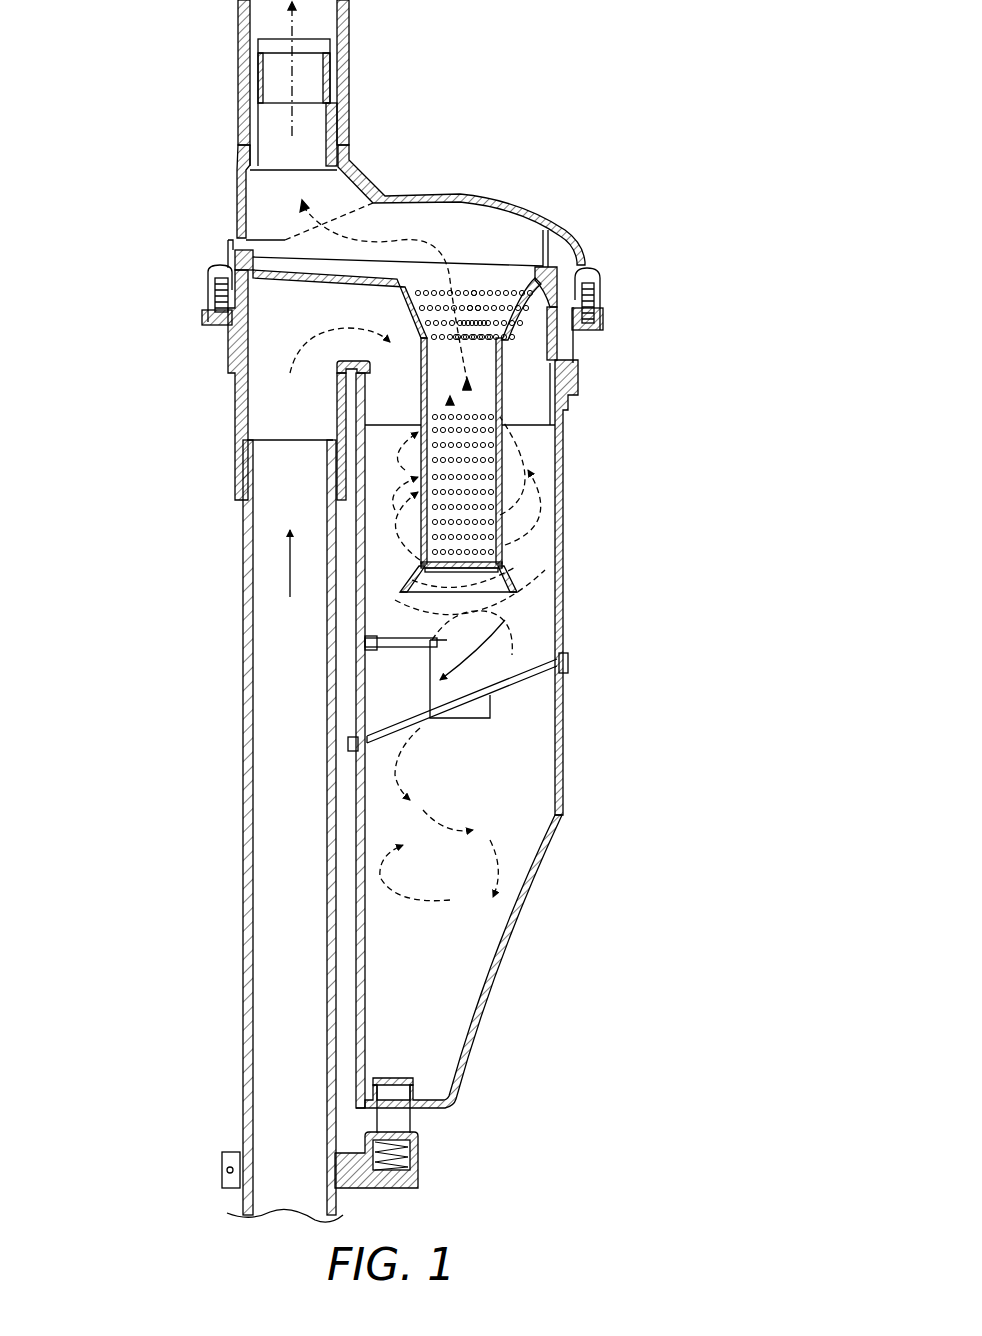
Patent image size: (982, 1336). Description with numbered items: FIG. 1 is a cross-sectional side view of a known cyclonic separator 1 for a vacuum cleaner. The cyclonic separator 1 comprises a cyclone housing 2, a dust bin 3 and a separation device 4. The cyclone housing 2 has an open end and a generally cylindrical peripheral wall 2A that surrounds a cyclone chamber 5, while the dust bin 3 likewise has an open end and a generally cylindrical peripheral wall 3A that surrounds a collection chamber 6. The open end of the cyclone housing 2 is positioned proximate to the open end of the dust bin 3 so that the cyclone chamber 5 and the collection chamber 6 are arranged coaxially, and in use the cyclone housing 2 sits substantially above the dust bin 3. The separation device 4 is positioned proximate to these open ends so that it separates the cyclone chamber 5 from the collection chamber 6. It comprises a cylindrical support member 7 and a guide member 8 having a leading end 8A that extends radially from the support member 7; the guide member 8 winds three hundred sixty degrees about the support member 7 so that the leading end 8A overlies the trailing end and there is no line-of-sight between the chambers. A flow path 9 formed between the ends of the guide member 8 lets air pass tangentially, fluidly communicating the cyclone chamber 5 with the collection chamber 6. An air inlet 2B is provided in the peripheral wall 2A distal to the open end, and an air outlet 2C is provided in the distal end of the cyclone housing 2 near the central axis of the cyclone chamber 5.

The cyclonic separator 1 is at (100, 190).
The cyclone housing 2 is at (563, 423).
The peripheral wall 2A is at (563, 467).
The air inlet 2B is at (385, 354).
The air outlet 2C is at (470, 370).
The dust bin 3 is at (560, 767).
The peripheral wall 3A is at (560, 747).
The separation device 4 is at (467, 713).
The cyclone chamber 5 is at (540, 552).
The collection chamber 6 is at (520, 790).
The cylindrical support member 7 is at (470, 648).
The guide member 8 is at (510, 672).
The leading end 8A is at (392, 636).
The flow path 9 is at (387, 680).